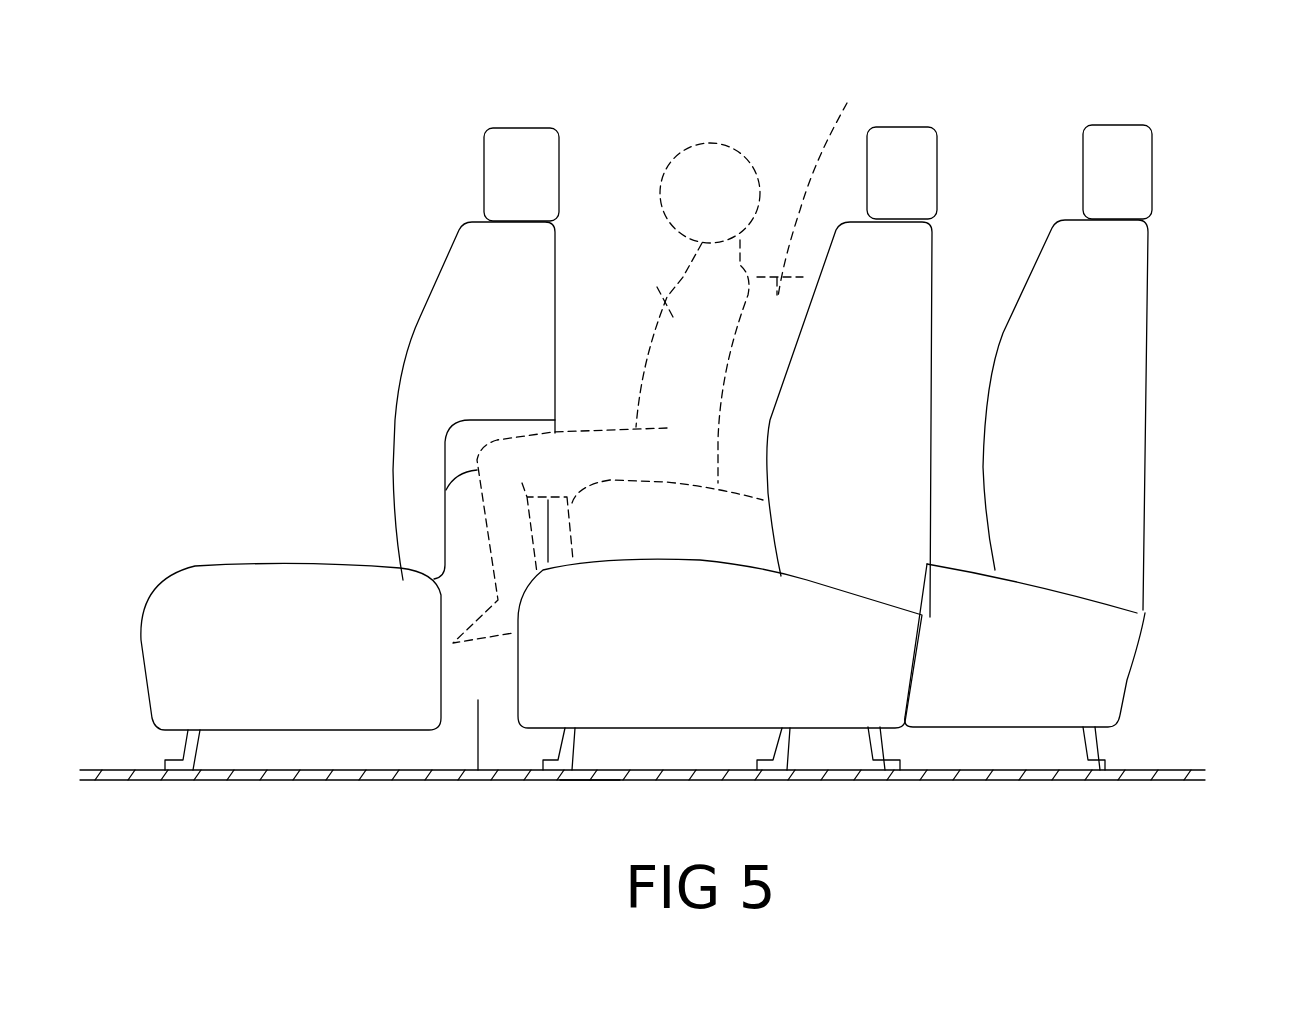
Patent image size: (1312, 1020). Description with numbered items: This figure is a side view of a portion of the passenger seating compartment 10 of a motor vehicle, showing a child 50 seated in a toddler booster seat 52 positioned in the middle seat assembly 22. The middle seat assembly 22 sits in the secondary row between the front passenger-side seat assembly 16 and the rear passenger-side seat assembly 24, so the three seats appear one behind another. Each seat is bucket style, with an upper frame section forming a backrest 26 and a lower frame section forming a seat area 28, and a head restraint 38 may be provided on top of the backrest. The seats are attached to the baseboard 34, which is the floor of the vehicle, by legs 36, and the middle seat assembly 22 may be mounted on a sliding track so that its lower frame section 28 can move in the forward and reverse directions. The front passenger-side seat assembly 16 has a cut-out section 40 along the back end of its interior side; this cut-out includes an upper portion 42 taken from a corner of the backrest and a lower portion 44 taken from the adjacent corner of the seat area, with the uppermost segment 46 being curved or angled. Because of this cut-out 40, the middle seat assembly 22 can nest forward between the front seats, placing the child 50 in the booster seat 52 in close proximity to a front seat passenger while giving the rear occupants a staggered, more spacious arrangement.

The passenger seating compartment 10 is at (814, 98).
The front passenger-side seat assembly 16 is at (300, 775).
The middle seat assembly 22 is at (710, 772).
The rear passenger-side seat assembly 24 is at (1185, 655).
The backrest 26 is at (893, 318).
The seat area 28 is at (1083, 630).
The baseboard 34 is at (585, 779).
The legs 36 is at (187, 747).
The head restraint 38 is at (928, 155).
The cut-out section 40 is at (567, 413).
The upper portion 42 is at (460, 558).
The lower portion 44 is at (478, 770).
The uppermost segment 46 is at (470, 457).
The child 50 is at (657, 287).
The toddler booster seat 52 is at (850, 99).